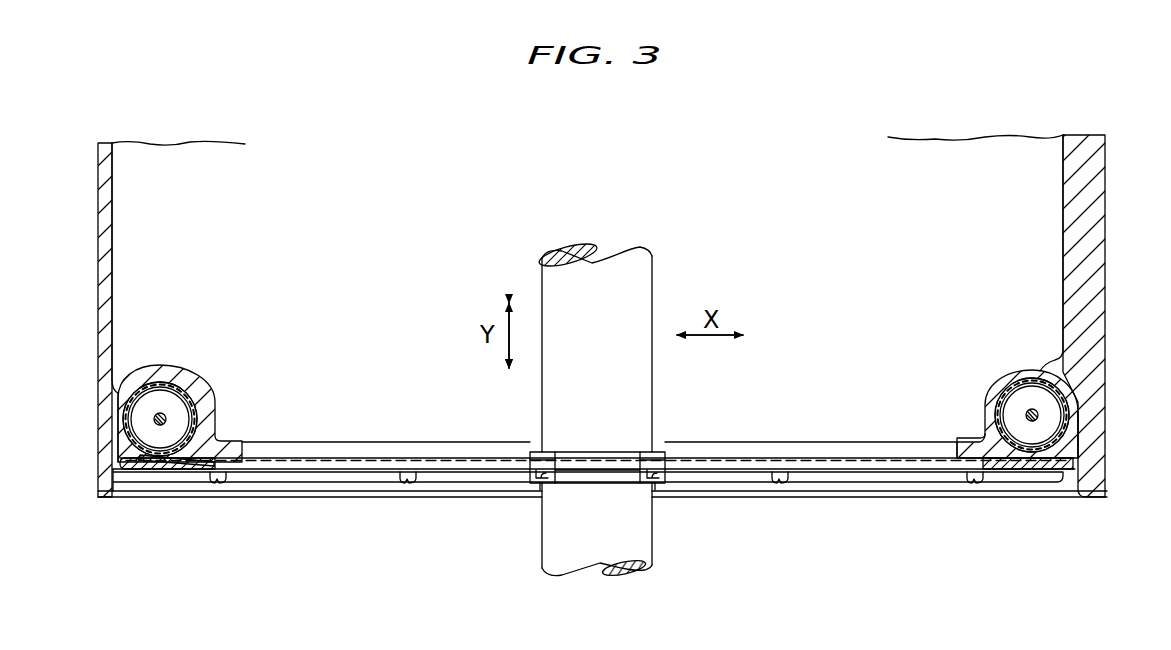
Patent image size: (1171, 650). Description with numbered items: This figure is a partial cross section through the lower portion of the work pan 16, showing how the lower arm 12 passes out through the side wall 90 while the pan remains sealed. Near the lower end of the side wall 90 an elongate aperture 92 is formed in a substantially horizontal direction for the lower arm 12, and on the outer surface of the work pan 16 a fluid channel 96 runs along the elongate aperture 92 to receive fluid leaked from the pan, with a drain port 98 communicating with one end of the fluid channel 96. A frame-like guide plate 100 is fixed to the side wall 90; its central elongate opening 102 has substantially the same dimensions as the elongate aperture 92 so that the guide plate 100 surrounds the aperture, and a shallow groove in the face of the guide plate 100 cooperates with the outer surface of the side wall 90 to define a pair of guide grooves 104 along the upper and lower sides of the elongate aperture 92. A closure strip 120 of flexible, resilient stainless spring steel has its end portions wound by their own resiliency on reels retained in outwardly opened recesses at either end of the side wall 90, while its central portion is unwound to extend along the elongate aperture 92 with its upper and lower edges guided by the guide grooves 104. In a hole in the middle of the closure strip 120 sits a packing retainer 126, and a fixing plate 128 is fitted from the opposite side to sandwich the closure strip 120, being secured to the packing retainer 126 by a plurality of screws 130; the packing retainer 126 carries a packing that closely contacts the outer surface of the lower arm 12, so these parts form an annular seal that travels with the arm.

The lower arm 12 is at (642, 417).
The work pan 16 is at (1100, 228).
The side wall 90 is at (977, 454).
The elongate aperture 92 is at (310, 453).
The fluid channel 96 is at (345, 484).
The drain port 98 is at (110, 488).
The guide plate 100 is at (185, 475).
The elongate opening 102 is at (280, 466).
The guide grooves 104 is at (144, 470).
The closure strip 120 is at (452, 462).
The packing retainer 126 is at (597, 484).
The fixing plate 128 is at (535, 451).
The screws 130 is at (545, 495).